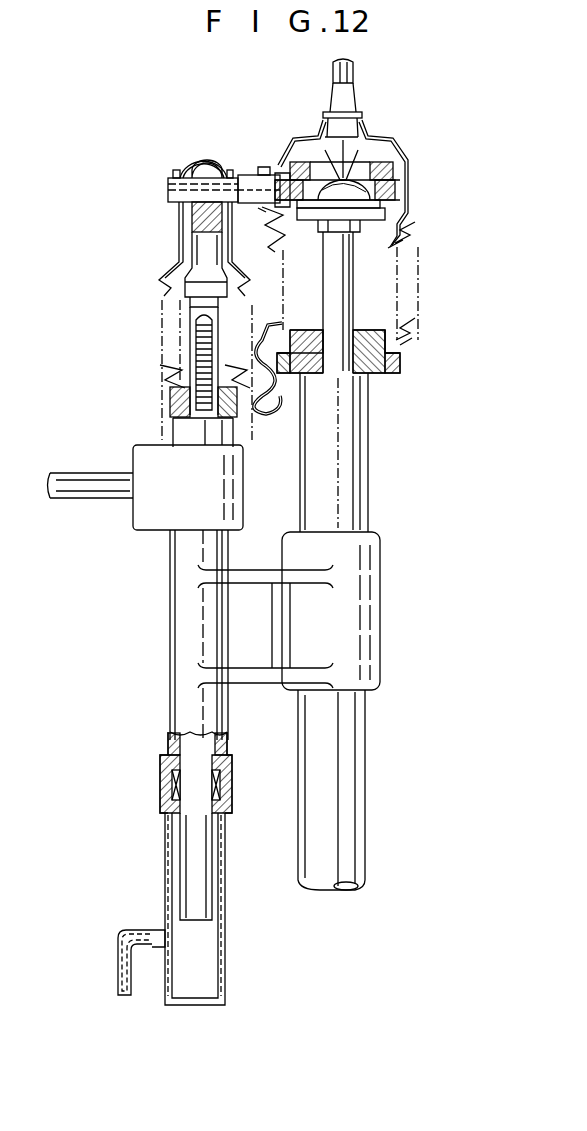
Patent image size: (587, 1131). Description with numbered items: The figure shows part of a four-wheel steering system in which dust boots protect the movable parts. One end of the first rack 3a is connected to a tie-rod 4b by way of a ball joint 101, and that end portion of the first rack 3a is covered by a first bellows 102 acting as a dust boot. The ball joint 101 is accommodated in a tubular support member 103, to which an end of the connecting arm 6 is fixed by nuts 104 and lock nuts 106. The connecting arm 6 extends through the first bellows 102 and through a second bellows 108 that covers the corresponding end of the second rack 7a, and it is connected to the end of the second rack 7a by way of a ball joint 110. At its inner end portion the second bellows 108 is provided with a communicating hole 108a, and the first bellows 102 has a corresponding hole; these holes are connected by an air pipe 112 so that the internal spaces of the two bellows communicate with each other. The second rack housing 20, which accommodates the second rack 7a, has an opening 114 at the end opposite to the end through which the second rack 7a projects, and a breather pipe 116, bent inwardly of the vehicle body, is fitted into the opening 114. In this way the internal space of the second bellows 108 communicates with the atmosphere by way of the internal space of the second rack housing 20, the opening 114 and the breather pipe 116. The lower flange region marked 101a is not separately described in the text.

The tie-rod 4b is at (357, 98).
The tubular support member 103 is at (372, 138).
The lock nut 106 is at (290, 140).
The nut 104 is at (272, 172).
The ball joint 101 is at (398, 168).
The first bellows 102 is at (413, 205).
The first rack 3a is at (345, 285).
The flange 101a is at (320, 373).
The ball joint 110 is at (198, 160).
The connecting arm 6 is at (178, 186).
The second bellows 108 is at (178, 250).
The second rack 7a is at (198, 352).
The communicating hole 108a is at (200, 378).
The air pipe 112 is at (270, 413).
The second rack housing 20 is at (185, 612).
The opening 114 is at (160, 930).
The breather pipe 116 is at (115, 958).